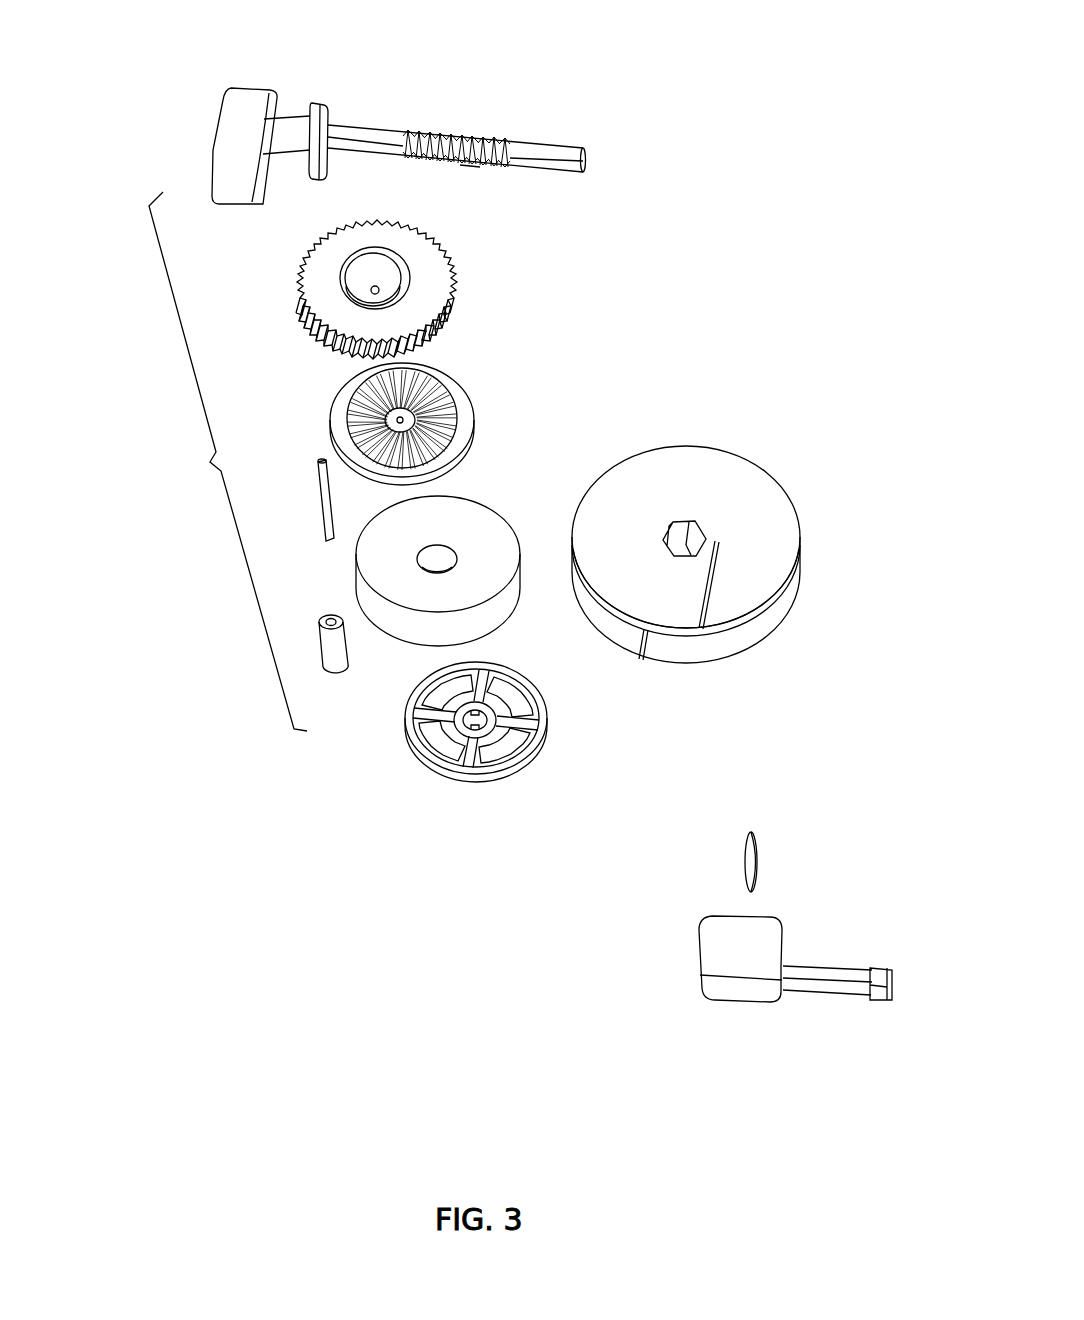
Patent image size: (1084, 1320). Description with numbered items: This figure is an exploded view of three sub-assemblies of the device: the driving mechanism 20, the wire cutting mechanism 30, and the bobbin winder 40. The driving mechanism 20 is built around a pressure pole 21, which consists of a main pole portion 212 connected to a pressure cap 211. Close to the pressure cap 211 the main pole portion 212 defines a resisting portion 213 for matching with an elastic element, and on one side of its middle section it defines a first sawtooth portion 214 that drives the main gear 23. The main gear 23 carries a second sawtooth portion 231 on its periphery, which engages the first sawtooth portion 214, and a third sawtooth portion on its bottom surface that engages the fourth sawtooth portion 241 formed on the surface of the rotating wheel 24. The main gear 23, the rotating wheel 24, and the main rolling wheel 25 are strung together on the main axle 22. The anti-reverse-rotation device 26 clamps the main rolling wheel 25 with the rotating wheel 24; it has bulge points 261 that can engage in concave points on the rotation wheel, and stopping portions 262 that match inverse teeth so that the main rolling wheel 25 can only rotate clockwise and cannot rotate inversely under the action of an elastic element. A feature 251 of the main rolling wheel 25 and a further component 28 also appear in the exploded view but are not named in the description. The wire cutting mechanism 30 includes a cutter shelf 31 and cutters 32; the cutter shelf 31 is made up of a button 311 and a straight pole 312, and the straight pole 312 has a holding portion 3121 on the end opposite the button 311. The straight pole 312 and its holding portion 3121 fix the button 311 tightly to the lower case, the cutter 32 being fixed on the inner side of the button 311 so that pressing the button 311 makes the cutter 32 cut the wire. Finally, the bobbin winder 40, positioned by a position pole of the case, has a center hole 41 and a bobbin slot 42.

The driving mechanism 20 is at (228, 461).
The pressure pole 21 is at (356, 119).
The pressure cap 211 is at (212, 135).
The main pole portion 212 is at (452, 135).
The resisting portion 213 is at (312, 112).
The first sawtooth portion 214 is at (468, 170).
The main axle 22 is at (318, 490).
The main gear 23 is at (440, 288).
The second sawtooth portion 231 is at (453, 310).
The rotating wheel 24 is at (378, 414).
The fourth sawtooth portion 241 is at (445, 403).
The main rolling wheel 25 is at (469, 532).
The wheel hole 251 is at (443, 557).
The anti-reverse-rotation device 26 is at (492, 728).
The bulge points 261 is at (483, 717).
The stopping portions 262 is at (458, 698).
The spacer 28 is at (340, 668).
The bobbin winder 40 is at (746, 497).
The center hole 41 is at (690, 520).
The bobbin slot 42 is at (735, 633).
The wire cutting mechanism 30 is at (741, 963).
The cutter shelf 31 is at (682, 997).
The button 311 is at (762, 997).
The straight pole 312 is at (842, 988).
The holding portion 3121 is at (885, 973).
The cutters 32 is at (757, 858).